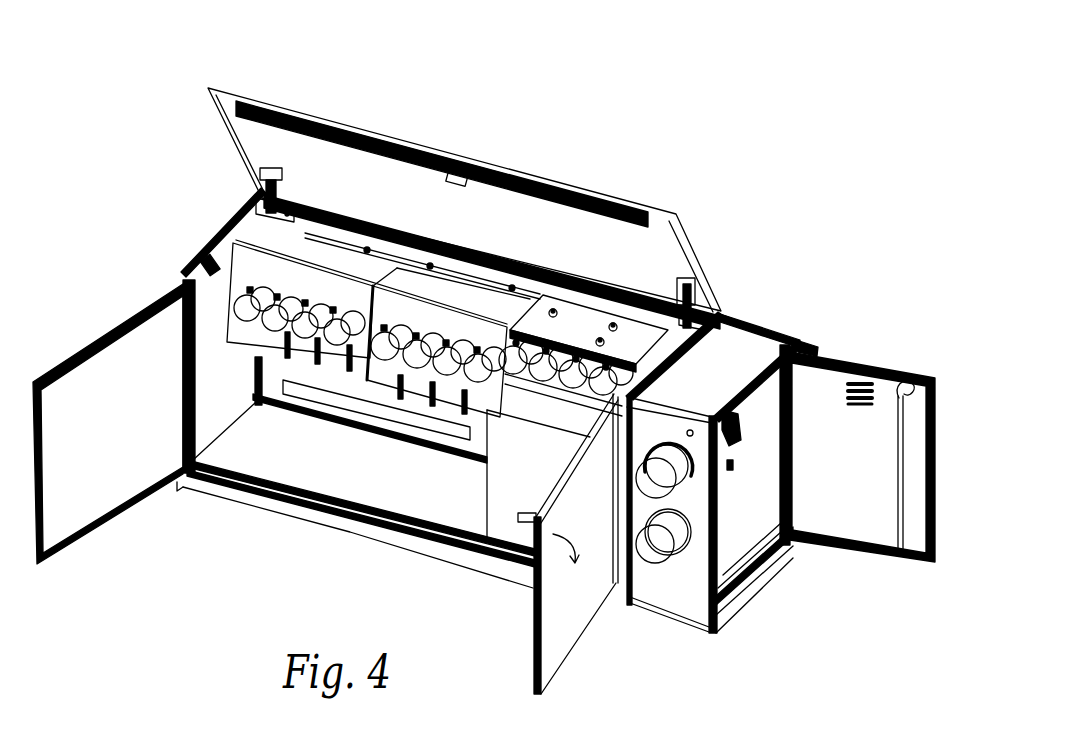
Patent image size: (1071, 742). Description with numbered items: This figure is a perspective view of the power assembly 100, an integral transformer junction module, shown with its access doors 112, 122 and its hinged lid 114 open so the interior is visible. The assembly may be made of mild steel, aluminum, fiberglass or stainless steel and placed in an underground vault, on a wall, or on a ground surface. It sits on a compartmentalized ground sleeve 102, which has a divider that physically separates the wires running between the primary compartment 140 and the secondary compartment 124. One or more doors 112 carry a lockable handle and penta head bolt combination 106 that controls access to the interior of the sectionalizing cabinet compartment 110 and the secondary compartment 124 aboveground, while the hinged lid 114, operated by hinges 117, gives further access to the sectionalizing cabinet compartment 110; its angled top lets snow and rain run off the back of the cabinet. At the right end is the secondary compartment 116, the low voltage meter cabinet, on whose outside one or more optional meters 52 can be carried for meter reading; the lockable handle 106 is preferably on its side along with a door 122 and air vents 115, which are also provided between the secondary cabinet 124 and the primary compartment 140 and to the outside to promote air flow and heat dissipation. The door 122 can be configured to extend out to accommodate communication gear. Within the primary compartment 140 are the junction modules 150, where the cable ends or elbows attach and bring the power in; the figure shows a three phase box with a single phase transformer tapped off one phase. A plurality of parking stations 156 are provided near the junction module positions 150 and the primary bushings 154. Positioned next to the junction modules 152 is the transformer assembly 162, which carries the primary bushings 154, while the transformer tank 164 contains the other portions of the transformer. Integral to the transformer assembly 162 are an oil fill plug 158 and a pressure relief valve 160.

The power assembly 100 is at (714, 176).
The compartmentalized ground sleeve 102 is at (503, 566).
The lockable handle and penta head bolt combination 106 is at (584, 541).
The sectionalizing cabinet compartment 110 is at (298, 473).
The access door 112 is at (80, 377).
The hinged lid 114 is at (275, 105).
The air vents 115 is at (857, 378).
The secondary compartment 116 is at (745, 596).
The hinges 117 is at (252, 186).
The door 122 is at (899, 373).
The secondary compartment 124 is at (783, 558).
The primary compartment 140 is at (285, 445).
The junction modules 150 is at (247, 296).
The junction modules 152 is at (440, 302).
The primary bushings 154 is at (520, 368).
The parking stations 156 is at (372, 350).
The oil fill plug 158 is at (552, 307).
The pressure relief valve 160 is at (614, 321).
The transformer assembly 162 is at (598, 336).
The transformer tank 164 is at (656, 284).
The meters 52 is at (662, 538).